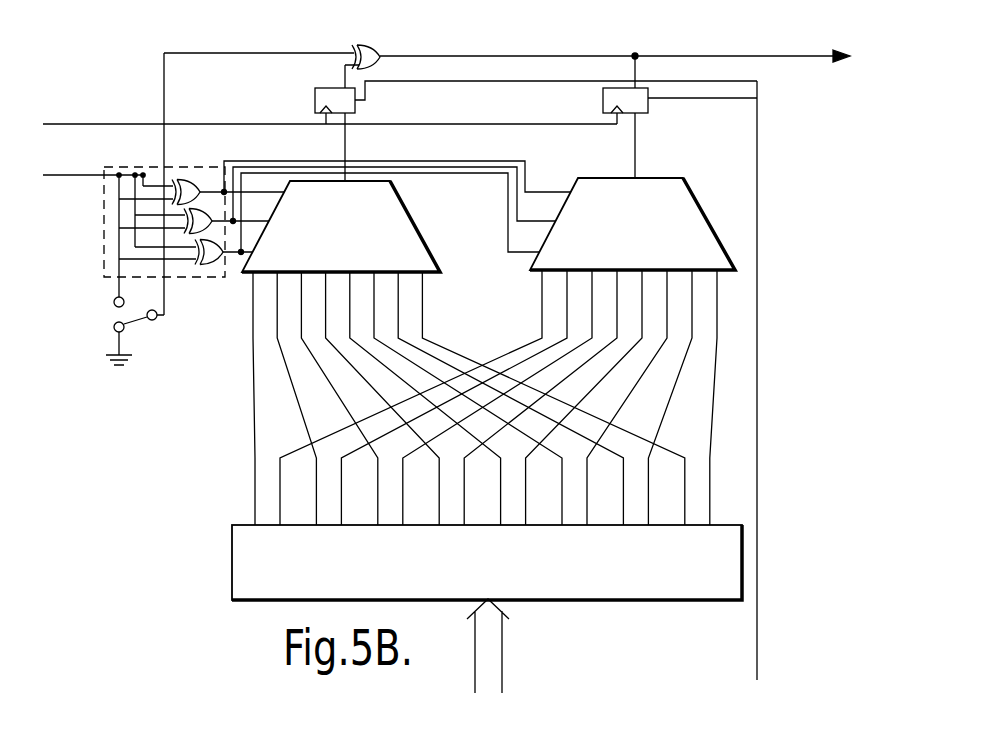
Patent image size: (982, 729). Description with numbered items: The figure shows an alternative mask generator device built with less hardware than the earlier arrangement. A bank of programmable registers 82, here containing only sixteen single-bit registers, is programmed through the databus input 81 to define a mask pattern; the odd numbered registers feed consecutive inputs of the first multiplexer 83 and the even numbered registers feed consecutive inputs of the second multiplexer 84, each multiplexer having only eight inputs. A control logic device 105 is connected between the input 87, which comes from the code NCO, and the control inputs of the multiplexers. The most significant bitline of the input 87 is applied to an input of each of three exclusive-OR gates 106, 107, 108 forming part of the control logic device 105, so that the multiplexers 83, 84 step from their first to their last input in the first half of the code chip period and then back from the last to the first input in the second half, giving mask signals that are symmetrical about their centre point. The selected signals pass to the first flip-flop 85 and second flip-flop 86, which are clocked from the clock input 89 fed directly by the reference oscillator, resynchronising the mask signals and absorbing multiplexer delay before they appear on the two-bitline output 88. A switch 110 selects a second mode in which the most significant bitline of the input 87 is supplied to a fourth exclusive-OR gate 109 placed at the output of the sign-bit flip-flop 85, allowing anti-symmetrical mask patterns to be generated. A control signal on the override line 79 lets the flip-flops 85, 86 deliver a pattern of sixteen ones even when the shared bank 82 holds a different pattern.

The override line 79 is at (758, 622).
The databus input 81 is at (502, 682).
The bank of programmable registers 82 is at (231, 570).
The first multiplexer 83 is at (418, 230).
The second multiplexer 84 is at (688, 197).
The first flip-flop 85 is at (314, 104).
The second flip-flop 86 is at (603, 104).
The input 87 is at (72, 176).
The mask generator device output 88 is at (814, 55).
The clock input 89 is at (128, 124).
The control logic device 105 is at (103, 269).
The exclusive-OR gate 106 is at (184, 180).
The exclusive-OR gate 107 is at (189, 236).
The exclusive-OR gate 108 is at (214, 266).
The fourth exclusive-OR gate 109 is at (368, 45).
The switch 110 is at (147, 320).